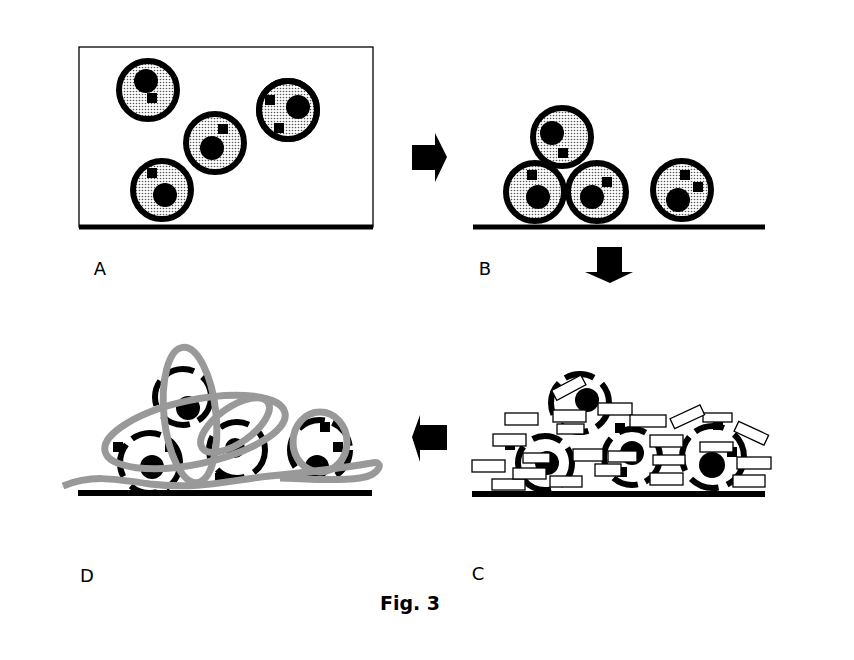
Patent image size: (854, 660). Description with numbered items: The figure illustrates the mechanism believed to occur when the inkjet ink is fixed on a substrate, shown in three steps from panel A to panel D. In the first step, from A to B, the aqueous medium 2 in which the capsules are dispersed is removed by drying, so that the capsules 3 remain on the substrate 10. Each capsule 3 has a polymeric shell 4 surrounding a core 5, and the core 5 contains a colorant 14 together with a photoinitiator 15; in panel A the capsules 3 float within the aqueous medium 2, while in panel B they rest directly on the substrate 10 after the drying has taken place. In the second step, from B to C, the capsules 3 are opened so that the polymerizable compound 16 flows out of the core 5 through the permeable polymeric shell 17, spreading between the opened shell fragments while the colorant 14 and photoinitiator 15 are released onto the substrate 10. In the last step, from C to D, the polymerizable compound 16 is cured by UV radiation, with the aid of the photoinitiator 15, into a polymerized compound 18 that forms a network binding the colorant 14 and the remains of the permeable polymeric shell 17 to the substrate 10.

The aqueous medium 2 is at (97, 147).
The capsules 3 is at (320, 97).
The polymeric shell 4 is at (323, 130).
The core 5 is at (282, 86).
The substrate 10 is at (117, 226).
The colorant 14 is at (299, 96).
The photoinitiator 15 is at (256, 98).
The polymerizable compound 16 is at (632, 400).
The permeable polymeric shell 17 is at (550, 380).
The polymerized compound 18 is at (232, 398).